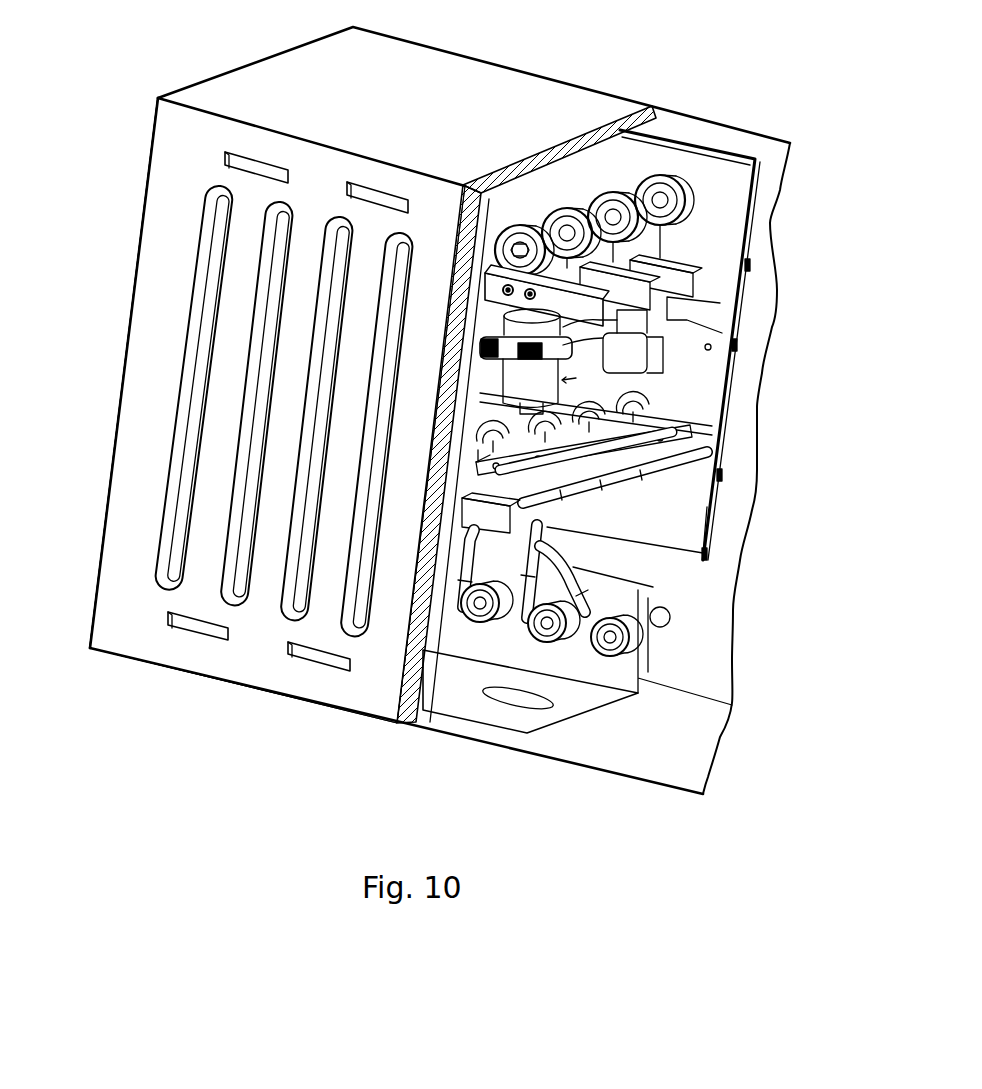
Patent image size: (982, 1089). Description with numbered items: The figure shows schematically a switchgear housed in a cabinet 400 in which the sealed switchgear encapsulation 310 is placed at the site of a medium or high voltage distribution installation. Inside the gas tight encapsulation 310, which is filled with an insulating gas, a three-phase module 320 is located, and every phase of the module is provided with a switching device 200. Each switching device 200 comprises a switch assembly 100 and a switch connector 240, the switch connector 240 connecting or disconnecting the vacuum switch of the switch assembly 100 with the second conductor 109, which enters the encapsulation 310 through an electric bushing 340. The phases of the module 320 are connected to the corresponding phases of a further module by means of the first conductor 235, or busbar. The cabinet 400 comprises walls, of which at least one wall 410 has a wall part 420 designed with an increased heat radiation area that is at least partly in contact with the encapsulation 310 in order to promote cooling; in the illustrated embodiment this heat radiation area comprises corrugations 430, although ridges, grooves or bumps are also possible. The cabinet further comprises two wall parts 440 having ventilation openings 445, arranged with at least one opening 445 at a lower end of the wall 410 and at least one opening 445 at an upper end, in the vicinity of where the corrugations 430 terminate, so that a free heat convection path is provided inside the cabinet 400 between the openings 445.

The cabinet 400 is at (223, 72).
The wall 410 is at (190, 147).
The wall part 420 is at (237, 476).
The corrugations 430 is at (170, 597).
The wall parts 440 is at (200, 157).
The ventilation openings 445 is at (373, 197).
The module 320 is at (618, 180).
The switching device 200 is at (655, 238).
The first conductor 235 is at (715, 335).
The switch assembly 100 is at (625, 435).
The switch connector 240 is at (707, 505).
The encapsulation 310 is at (673, 525).
The second conductor 109 is at (477, 632).
The electric bushing 340 is at (627, 595).